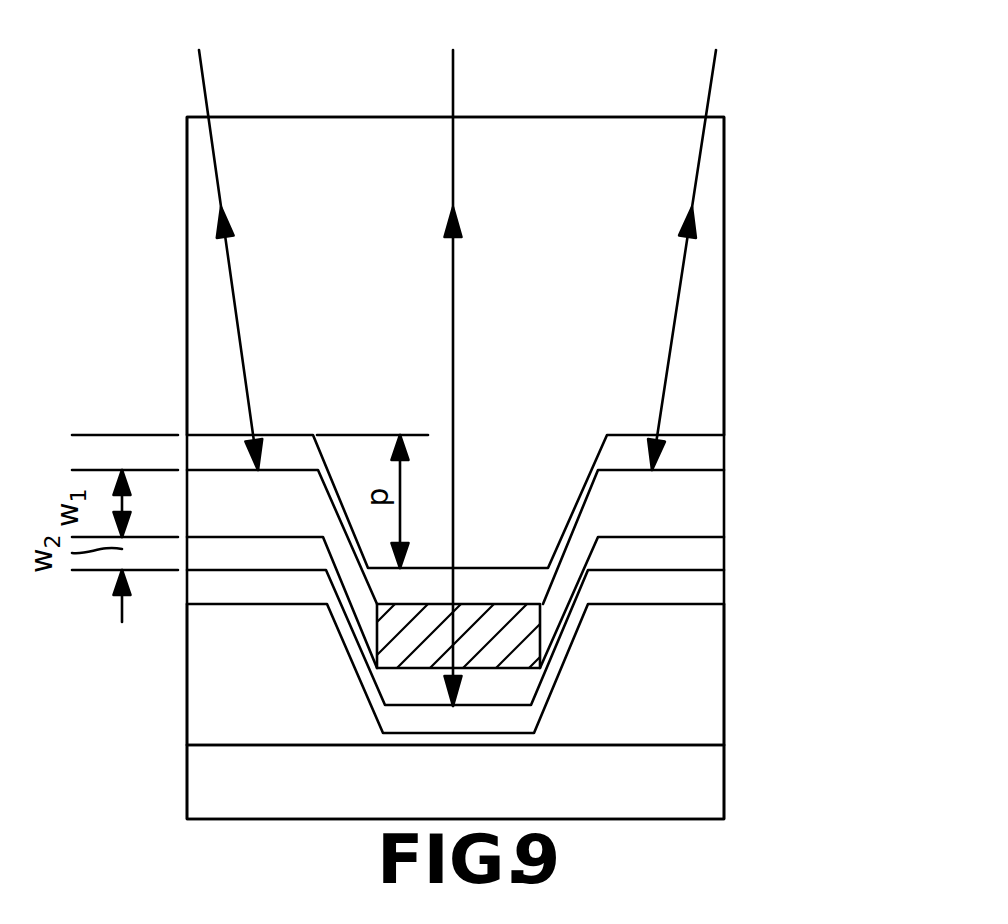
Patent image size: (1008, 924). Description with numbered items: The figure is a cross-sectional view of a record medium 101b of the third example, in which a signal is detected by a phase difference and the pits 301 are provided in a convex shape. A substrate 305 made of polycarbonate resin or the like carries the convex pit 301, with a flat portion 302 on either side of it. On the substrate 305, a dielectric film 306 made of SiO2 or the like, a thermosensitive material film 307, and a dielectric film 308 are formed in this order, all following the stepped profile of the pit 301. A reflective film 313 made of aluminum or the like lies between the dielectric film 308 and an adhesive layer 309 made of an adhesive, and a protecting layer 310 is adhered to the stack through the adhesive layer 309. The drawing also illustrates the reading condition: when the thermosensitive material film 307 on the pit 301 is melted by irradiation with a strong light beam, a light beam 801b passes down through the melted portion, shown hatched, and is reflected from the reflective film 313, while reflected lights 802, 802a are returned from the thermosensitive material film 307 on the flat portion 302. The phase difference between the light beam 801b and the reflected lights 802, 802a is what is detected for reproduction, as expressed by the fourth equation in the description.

The record medium 101b is at (724, 172).
The substrate 305 is at (705, 232).
The flat portion 302 is at (690, 433).
The dielectric film 306 is at (705, 453).
The thermosensitive material film 307 is at (690, 513).
The dielectric film 308 is at (703, 547).
The reflective film 313 is at (695, 588).
The adhesive layer 309 is at (705, 675).
The protecting layer 310 is at (700, 775).
The pit 301 is at (488, 568).
The reflected light 802 is at (205, 78).
The light beam 801b is at (453, 72).
The reflected light 802a is at (712, 83).